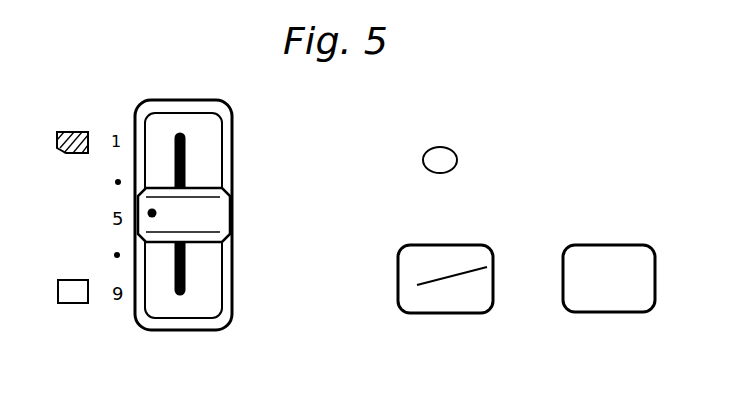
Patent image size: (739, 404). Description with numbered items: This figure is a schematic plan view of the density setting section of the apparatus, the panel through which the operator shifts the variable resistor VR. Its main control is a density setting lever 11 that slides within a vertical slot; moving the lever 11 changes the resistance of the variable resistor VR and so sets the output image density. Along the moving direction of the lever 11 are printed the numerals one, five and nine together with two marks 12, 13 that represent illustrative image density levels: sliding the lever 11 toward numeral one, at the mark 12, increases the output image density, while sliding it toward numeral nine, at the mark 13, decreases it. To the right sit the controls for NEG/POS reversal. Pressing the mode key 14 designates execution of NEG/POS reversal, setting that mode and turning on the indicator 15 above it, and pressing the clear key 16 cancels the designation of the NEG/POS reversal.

The density setting lever 11 is at (229, 214).
The mark 12 is at (58, 135).
The mark 13 is at (62, 298).
The mode key 14 is at (484, 313).
The indicator 15 is at (457, 160).
The clear key 16 is at (633, 313).